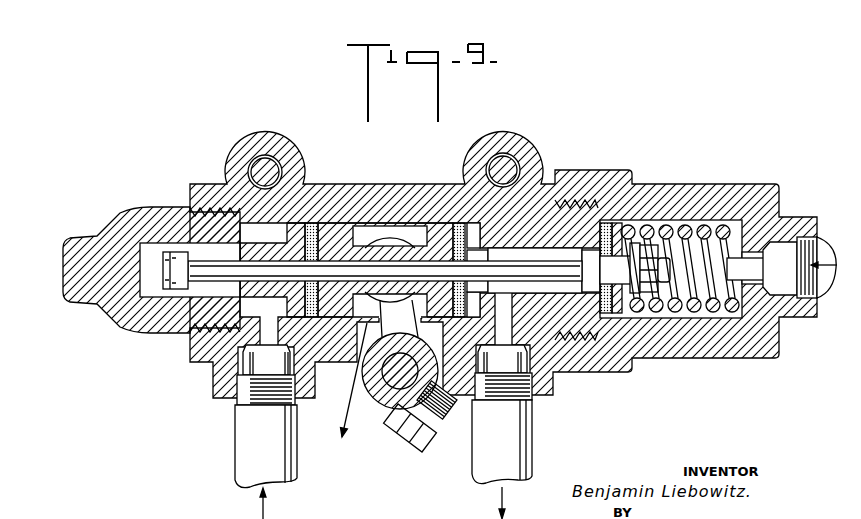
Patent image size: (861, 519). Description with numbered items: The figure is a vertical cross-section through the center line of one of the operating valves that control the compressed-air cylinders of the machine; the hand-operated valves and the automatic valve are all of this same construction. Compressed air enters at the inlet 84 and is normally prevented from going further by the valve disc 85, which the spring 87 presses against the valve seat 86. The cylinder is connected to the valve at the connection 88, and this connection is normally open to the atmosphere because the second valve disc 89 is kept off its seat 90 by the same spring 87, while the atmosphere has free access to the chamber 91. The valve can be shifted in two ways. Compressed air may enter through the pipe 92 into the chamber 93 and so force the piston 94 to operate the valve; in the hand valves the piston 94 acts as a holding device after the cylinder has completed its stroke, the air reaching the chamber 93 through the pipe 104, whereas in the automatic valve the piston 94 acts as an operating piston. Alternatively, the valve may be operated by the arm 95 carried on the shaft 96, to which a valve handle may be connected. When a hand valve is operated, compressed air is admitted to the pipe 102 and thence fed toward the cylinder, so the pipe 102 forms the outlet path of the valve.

The compressed air inlet 84 is at (743, 275).
The valve disc 85 is at (600, 220).
The valve seat 86 is at (600, 302).
The spring 87 is at (663, 230).
The cylinder connection 88 is at (507, 332).
The valve disc 89 is at (456, 228).
The valve seat 90 is at (488, 240).
The chamber 91 is at (372, 228).
The pipe 92 is at (267, 335).
The chamber 93 is at (252, 233).
The piston 94 is at (303, 226).
The arm 95 is at (373, 368).
The shaft 96 is at (368, 405).
The pipe 102 is at (480, 462).
The pipe 104 is at (250, 464).